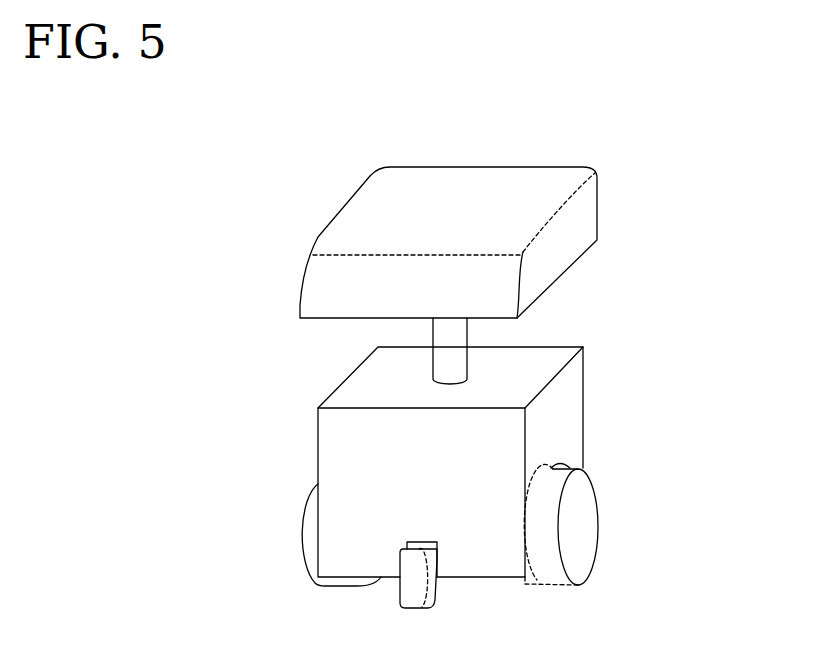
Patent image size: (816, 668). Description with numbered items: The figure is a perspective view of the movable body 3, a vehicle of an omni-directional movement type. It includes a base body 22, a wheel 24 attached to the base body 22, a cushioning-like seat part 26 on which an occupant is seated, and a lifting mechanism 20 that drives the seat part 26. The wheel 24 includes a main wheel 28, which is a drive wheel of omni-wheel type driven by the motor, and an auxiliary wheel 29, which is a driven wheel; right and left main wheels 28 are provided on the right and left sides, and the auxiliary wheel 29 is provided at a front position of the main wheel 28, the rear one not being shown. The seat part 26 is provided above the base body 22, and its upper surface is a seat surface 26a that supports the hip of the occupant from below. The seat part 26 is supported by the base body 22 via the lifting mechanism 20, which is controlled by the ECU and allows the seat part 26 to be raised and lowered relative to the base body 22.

The movable body 3 is at (609, 150).
The lifting mechanism 20 is at (445, 365).
The base body 22 is at (573, 407).
The wheel 24 is at (446, 553).
The seat part 26 is at (606, 206).
The seat surface 26a is at (485, 195).
The main wheel 28 is at (583, 527).
The auxiliary wheel 29 is at (428, 588).